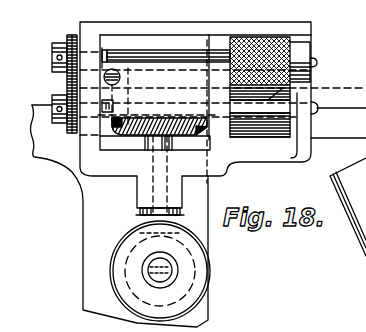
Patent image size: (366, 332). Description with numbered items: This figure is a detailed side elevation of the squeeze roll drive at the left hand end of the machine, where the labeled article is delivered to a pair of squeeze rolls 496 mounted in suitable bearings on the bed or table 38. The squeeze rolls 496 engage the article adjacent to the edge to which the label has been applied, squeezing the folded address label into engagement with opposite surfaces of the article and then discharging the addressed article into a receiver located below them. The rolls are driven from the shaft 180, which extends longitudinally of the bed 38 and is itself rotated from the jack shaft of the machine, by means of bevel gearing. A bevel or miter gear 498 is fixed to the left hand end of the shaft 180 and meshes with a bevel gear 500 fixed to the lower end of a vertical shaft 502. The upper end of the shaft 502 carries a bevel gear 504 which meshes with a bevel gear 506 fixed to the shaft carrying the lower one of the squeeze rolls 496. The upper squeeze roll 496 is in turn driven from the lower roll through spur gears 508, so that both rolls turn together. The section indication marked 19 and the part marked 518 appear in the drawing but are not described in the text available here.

The spur gears 508 is at (70, 100).
The section line for Fig. 19 is at (32, 103).
The bevel gear 506 is at (121, 93).
The bevel gear 504 is at (140, 133).
The vertical shaft 502 is at (193, 192).
The bevel gear 500 is at (141, 218).
The bevel or miter gear 498 is at (183, 285).
The shaft 180 is at (173, 263).
The squeeze rolls 496 is at (291, 49).
The bed or table 38 is at (344, 127).
The plate 518 is at (365, 284).